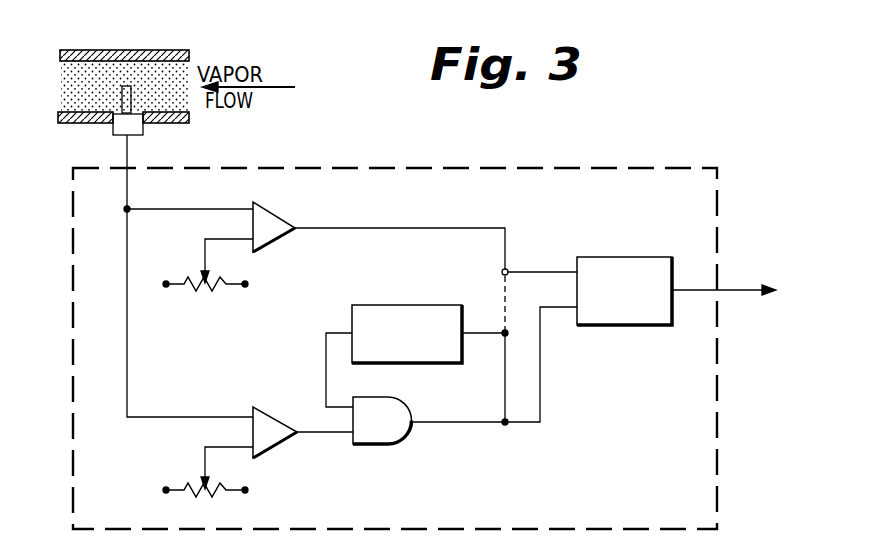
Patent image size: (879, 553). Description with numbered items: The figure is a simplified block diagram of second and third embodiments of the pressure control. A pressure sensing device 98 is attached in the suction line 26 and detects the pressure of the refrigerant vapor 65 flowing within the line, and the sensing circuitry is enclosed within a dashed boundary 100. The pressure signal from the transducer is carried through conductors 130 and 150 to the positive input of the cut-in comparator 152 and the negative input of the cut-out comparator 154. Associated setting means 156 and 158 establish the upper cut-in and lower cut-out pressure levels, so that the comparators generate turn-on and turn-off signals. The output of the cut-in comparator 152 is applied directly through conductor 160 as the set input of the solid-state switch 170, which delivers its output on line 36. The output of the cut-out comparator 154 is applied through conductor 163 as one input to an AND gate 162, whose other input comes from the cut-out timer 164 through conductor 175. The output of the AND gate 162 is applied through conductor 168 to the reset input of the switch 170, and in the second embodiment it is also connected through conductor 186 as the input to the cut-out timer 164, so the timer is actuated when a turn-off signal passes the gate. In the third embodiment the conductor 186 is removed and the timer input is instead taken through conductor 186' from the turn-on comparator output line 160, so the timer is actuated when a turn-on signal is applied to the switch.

The suction line 26 is at (83, 51).
The pressure sensing device 98 is at (127, 83).
The refrigerant vapor 65 is at (167, 93).
The control circuit 100 is at (561, 165).
The conductor 130 is at (127, 184).
The conductor 150 is at (193, 208).
The cut-in comparator circuit 152 is at (277, 212).
The setting means 156 is at (206, 291).
The cut-out comparator circuit 154 is at (262, 408).
The setting means 158 is at (192, 498).
The conductor 160 is at (418, 229).
The cut-out timer 164 is at (372, 305).
The conductor 175 is at (325, 364).
The conductor 186 is at (482, 377).
The conductor 186' is at (462, 294).
The AND gate 162 is at (397, 444).
The conductor 163 is at (335, 437).
The conductor 168 is at (542, 410).
The solid-state switch 170 is at (615, 257).
The output signal line 36 is at (738, 288).